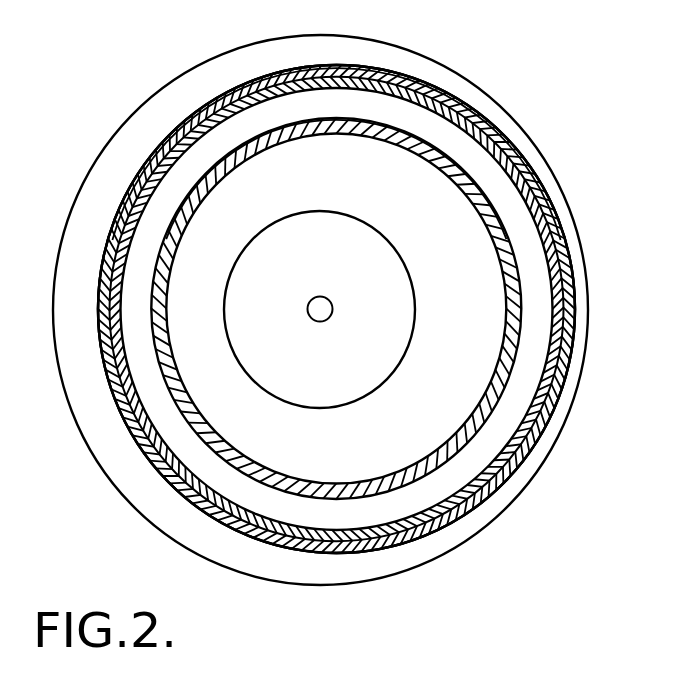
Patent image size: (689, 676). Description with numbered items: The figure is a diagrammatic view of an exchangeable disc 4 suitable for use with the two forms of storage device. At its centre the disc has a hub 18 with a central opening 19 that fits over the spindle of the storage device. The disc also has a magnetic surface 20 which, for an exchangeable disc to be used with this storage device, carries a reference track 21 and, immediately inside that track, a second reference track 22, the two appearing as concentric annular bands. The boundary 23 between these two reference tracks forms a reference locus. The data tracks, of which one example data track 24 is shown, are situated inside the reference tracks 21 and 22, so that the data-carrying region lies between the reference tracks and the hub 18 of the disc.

The exchangeable disc 4 is at (354, 310).
The hub 18 is at (375, 367).
The central opening 19 is at (322, 317).
The magnetic surface 20 is at (582, 267).
The reference track 21 is at (555, 228).
The reference track 22 is at (555, 185).
The boundary 23 is at (520, 157).
The data track 24 is at (462, 172).